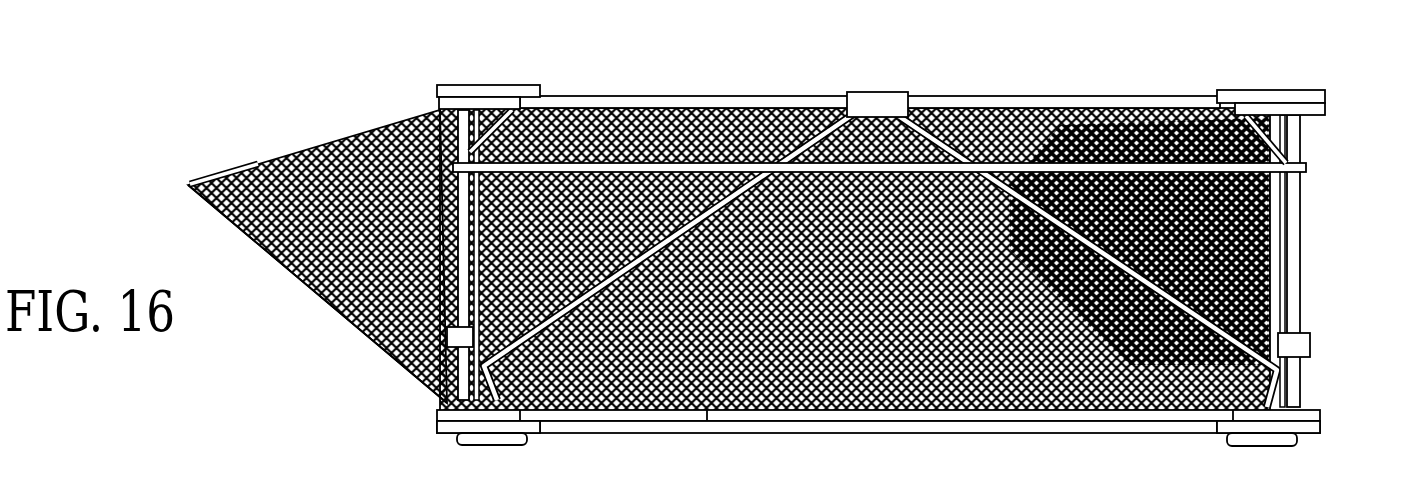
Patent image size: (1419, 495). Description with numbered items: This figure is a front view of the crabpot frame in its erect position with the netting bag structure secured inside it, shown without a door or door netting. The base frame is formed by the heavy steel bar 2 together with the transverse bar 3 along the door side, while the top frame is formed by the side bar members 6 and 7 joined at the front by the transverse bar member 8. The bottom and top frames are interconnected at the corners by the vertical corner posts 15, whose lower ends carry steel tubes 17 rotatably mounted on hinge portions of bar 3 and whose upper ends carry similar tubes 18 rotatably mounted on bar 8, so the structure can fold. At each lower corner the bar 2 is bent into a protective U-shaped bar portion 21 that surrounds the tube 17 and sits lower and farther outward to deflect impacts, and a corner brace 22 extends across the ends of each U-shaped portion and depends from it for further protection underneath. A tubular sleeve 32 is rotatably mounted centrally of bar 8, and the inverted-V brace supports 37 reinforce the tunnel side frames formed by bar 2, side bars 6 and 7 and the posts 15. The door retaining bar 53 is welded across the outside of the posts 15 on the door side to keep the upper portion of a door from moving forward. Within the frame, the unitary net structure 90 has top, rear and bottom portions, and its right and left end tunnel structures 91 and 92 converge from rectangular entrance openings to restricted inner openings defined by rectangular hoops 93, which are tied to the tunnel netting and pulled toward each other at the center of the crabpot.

The heavy steel bar 2 is at (783, 428).
The transverse heavy steel bar 3 is at (972, 420).
The side bar member 6 is at (452, 85).
The side bar member 7 is at (1320, 92).
The transverse bar member 8 is at (1087, 98).
The corner post 15 is at (362, 328).
The steel tube 17 is at (436, 398).
The tube 18 is at (440, 113).
The U-shaped bar portion 21 is at (462, 445).
The corner brace 22 is at (518, 442).
The tubular sleeve 32 is at (893, 92).
The inverted-V brace support 37 is at (1275, 270).
The door retaining bar 53 is at (1307, 169).
The unitary net structure 90 is at (706, 394).
The right end tunnel structure 91 is at (1172, 340).
The left end tunnel structure 92 is at (271, 261).
The rectangular hoop 93 is at (213, 167).